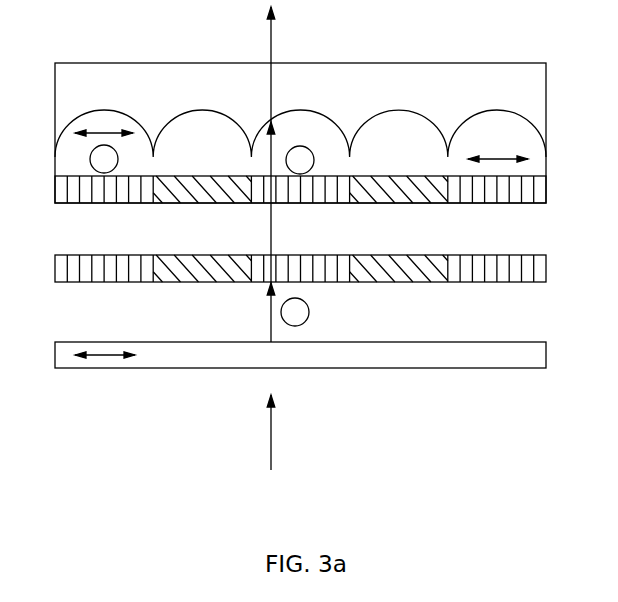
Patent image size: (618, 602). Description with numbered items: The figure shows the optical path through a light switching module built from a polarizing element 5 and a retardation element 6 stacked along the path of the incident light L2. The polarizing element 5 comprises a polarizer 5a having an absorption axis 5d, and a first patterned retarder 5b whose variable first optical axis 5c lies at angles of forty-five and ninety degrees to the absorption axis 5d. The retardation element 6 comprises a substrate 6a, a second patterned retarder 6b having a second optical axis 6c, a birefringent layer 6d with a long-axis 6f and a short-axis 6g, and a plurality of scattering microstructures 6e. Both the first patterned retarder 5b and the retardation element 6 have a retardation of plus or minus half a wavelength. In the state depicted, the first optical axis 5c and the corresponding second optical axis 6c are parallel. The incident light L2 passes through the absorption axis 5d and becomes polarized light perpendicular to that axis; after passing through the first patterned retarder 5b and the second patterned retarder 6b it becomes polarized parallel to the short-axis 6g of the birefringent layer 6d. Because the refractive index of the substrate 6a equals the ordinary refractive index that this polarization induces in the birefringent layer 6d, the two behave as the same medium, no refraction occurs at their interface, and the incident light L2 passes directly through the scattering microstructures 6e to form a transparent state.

The polarizing element 5 is at (47, 255).
The polarizer 5a is at (533, 362).
The first patterned retarder 5b is at (533, 272).
The first optical axis 5c is at (487, 265).
The absorption axis 5d is at (102, 363).
The retardation element 6 is at (47, 63).
The substrate 6a is at (528, 102).
The second patterned retarder 6b is at (533, 194).
The second optical axis 6c is at (483, 192).
The birefringent layer 6d is at (533, 167).
The scattering microstructures 6e is at (429, 104).
The long-axis 6f is at (104, 119).
The short-axis 6g is at (85, 167).
The incident light L2 is at (288, 238).